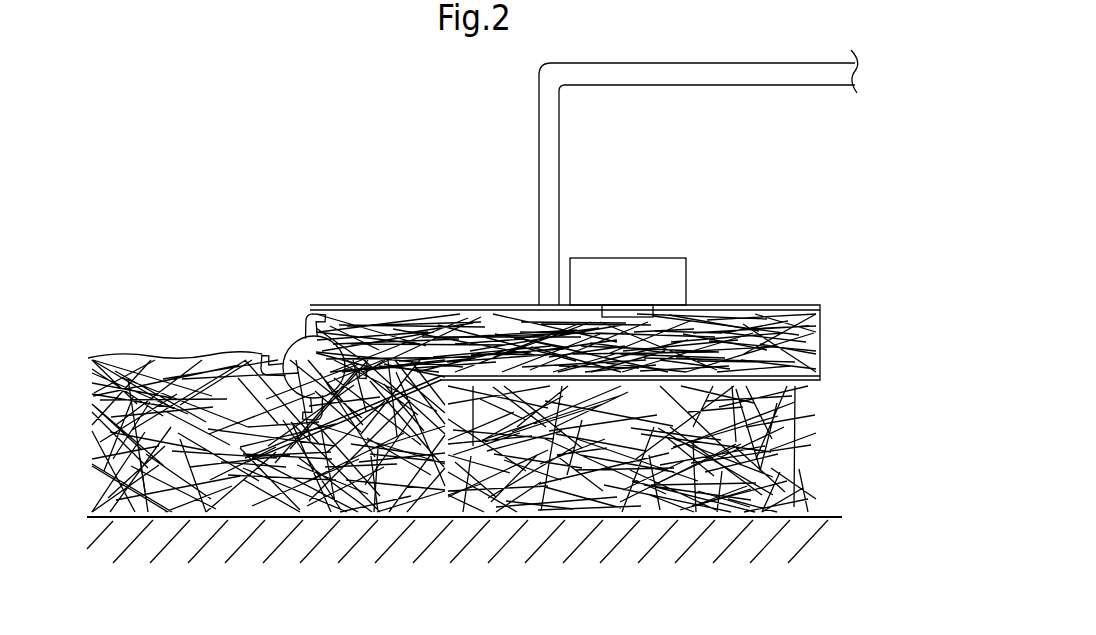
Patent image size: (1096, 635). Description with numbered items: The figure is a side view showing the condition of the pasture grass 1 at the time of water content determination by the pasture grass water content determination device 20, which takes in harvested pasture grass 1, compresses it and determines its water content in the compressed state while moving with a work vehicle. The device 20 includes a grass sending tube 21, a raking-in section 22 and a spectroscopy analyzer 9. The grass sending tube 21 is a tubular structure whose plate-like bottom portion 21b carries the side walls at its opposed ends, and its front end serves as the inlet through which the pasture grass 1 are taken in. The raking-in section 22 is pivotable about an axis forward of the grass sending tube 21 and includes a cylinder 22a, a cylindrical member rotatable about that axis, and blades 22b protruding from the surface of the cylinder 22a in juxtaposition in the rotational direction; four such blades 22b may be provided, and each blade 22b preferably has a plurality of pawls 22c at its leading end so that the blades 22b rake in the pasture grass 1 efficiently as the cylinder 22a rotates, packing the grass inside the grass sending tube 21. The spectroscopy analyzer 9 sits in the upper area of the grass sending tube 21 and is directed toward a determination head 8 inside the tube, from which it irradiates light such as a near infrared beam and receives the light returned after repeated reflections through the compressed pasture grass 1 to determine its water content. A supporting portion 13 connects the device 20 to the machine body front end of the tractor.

The pasture grass 1 is at (141, 366).
The pasture grass water content determination device 20 is at (403, 193).
The grass sending tube 21 is at (478, 304).
The bottom portion 21b is at (325, 432).
The supporting portion 13 is at (549, 147).
The spectroscopy analyzer 9 is at (655, 267).
The determination head 8 is at (628, 316).
The raking-in section 22 is at (305, 332).
The cylinder 22a is at (313, 356).
The blades 22b is at (366, 348).
The pawls 22c is at (322, 311).